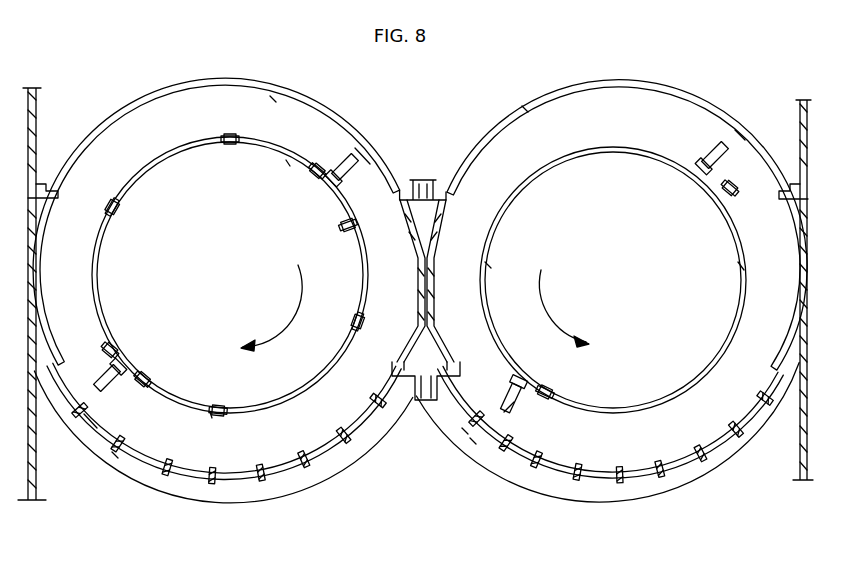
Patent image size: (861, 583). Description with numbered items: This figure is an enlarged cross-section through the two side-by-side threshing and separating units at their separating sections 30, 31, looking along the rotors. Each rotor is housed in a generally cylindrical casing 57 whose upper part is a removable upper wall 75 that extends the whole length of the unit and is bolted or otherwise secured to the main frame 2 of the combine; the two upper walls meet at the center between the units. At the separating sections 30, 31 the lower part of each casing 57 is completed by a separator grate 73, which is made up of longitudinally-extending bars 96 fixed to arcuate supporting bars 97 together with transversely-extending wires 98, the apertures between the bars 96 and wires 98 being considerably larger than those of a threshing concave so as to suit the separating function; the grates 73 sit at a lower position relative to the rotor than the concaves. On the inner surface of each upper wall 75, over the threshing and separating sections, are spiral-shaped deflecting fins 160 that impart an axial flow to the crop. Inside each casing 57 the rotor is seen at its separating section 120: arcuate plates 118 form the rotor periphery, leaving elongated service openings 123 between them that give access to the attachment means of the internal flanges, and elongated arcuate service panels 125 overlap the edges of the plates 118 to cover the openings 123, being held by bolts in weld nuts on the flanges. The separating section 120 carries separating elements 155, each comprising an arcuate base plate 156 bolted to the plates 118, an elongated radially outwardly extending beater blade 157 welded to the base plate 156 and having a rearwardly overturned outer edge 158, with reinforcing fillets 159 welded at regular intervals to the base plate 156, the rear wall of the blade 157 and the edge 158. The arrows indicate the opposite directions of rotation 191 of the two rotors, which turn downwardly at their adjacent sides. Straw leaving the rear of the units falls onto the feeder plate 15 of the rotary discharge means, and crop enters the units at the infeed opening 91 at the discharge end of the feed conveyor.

The main frame 2 is at (37, 114).
The feeder plate 15 is at (292, 92).
The separating section 30 is at (186, 512).
The separating section 31 is at (692, 488).
The casing 57 is at (412, 108).
The separator grate 73 is at (332, 412).
The upper wall 75 is at (532, 104).
The infeed opening 91 is at (464, 430).
The longitudinally-extending bar 96 is at (572, 478).
The arcuate supporting bar 97 is at (238, 504).
The transversely-extending wire 98 is at (114, 454).
The arcuate plate 118 is at (284, 166).
The separating section of the rotor 120 is at (133, 130).
The service opening 123 is at (170, 176).
The service panel 125 is at (165, 152).
The separating element 155 is at (328, 158).
The arcuate base plate 156 is at (355, 232).
The beater blade 157 is at (352, 180).
The overturned outer edge 158 is at (370, 164).
The reinforcing fillet 159 is at (352, 150).
The spiral-shaped deflecting fin 160 is at (274, 100).
The opposite directions of rotation 191 is at (290, 312).